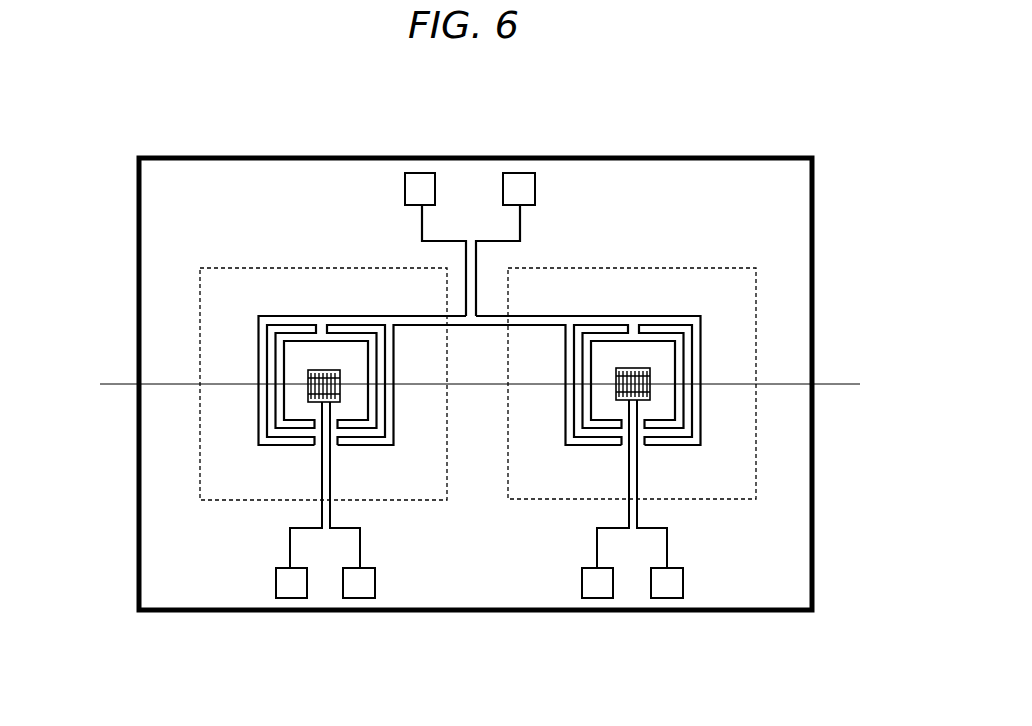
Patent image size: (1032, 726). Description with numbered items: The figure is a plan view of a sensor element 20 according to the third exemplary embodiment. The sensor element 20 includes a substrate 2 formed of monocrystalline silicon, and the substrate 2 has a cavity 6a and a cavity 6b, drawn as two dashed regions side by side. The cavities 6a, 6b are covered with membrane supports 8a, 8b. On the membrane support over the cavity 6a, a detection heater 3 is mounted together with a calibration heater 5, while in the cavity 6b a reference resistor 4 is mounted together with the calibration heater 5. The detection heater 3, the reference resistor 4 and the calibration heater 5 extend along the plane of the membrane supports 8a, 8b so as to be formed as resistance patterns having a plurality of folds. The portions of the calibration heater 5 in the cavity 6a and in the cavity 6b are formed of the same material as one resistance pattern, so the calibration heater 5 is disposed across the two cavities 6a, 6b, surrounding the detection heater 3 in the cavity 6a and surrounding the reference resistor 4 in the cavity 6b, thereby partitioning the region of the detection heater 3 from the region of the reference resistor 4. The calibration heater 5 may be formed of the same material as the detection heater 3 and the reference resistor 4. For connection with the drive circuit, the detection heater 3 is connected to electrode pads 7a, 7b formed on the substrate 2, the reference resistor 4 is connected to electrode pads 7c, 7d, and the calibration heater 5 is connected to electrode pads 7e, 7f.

The sensor element 20 is at (113, 163).
The substrate 2 is at (137, 533).
The detection heater 3 is at (320, 370).
The reference resistor 4 is at (640, 368).
The calibration heater 5 is at (258, 332).
The cavity 6a is at (413, 500).
The cavity 6b is at (725, 500).
The electrode pad 7a is at (291, 585).
The electrode pad 7b is at (359, 585).
The electrode pad 7c is at (597, 585).
The electrode pad 7d is at (667, 585).
The electrode pad 7e is at (422, 186).
The electrode pad 7f is at (517, 186).
The membrane support 8a is at (738, 433).
The membrane support 8b is at (738, 393).